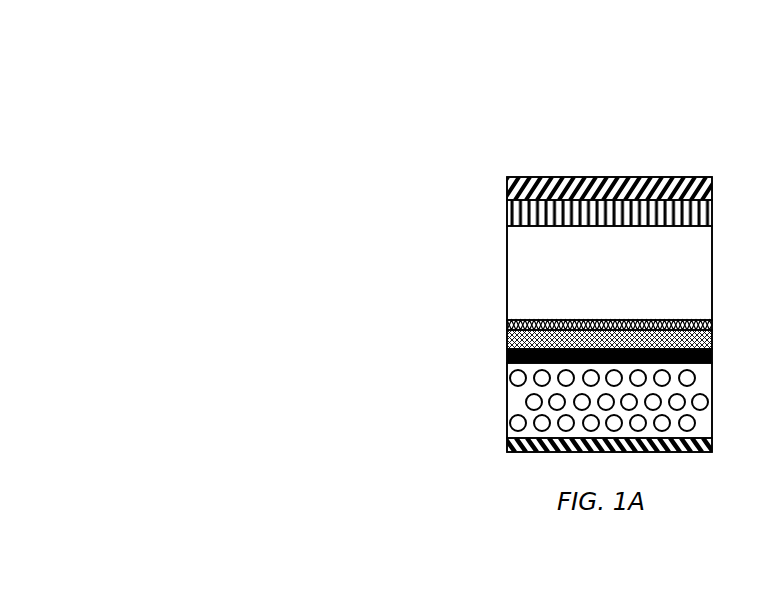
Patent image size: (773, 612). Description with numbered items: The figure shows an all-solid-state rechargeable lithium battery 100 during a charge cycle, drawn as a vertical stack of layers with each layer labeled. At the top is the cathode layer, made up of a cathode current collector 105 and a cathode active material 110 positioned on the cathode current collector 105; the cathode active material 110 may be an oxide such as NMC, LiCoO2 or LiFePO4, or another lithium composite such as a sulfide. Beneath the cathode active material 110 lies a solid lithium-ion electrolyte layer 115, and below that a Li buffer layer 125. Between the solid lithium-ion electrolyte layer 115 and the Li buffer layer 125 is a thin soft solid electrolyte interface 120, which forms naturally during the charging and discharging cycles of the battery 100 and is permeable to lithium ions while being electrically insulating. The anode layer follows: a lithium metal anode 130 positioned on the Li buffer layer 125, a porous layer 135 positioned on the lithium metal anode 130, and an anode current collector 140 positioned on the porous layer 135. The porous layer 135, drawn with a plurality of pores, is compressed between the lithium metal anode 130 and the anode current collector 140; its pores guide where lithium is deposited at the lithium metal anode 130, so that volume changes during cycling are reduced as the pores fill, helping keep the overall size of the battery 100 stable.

The all-solid-state rechargeable lithium battery 100 is at (604, 160).
The cathode current collector 105 is at (500, 187).
The cathode active material 110 is at (500, 213).
The solid lithium-ion electrolyte layer 115 is at (500, 259).
The soft solid electrolyte interface 120 is at (499, 322).
The Li buffer layer 125 is at (500, 340).
The lithium metal anode 130 is at (500, 358).
The porous layer 135 is at (500, 395).
The anode current collector 140 is at (500, 443).